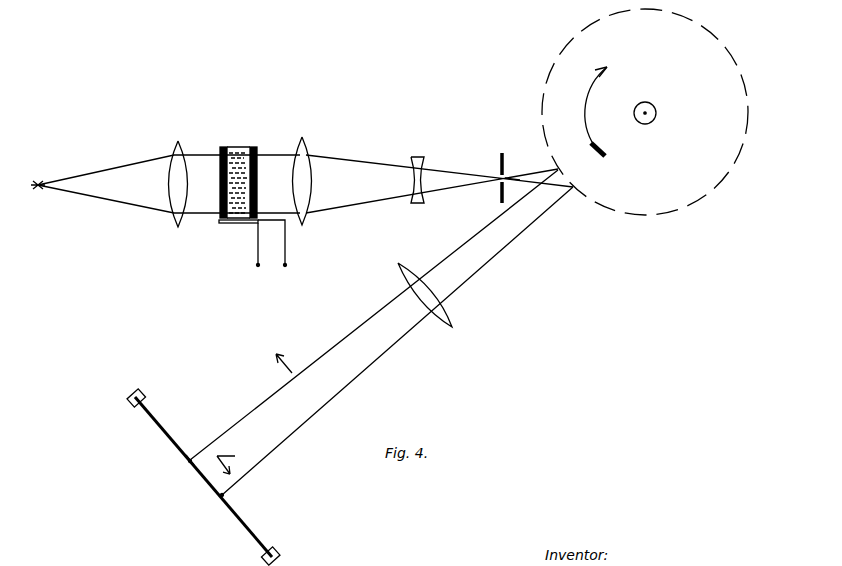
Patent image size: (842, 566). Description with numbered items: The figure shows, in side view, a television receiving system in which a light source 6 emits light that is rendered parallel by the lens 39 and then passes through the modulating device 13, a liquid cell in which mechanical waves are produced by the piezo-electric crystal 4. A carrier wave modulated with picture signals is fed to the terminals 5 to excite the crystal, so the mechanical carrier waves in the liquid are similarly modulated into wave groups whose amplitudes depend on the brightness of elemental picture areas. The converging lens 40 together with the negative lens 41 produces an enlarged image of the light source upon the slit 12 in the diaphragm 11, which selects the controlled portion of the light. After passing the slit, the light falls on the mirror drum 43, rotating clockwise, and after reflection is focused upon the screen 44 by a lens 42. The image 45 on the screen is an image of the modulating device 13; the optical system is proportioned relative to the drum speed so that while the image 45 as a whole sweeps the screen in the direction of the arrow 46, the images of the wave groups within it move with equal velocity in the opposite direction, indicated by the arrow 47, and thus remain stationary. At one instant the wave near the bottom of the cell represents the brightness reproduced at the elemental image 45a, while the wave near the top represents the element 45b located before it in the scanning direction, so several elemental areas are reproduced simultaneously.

The piezo-electric crystal 4 is at (237, 225).
The terminals 5 is at (278, 274).
The light source 6 is at (38, 173).
The diaphragm 11 is at (500, 162).
The slit 12 is at (507, 179).
The modulating device 13 is at (233, 200).
The lens 39 is at (170, 170).
The converging lens 40 is at (308, 160).
The negative lens 41 is at (411, 164).
The lens 42 is at (403, 272).
The mirror drum 43 is at (553, 108).
The screen 44 is at (246, 527).
The image 45 is at (196, 460).
The elemental image 45a is at (190, 464).
The elemental image 45b is at (231, 498).
The arrow 46 is at (292, 372).
The arrow 47 is at (235, 456).